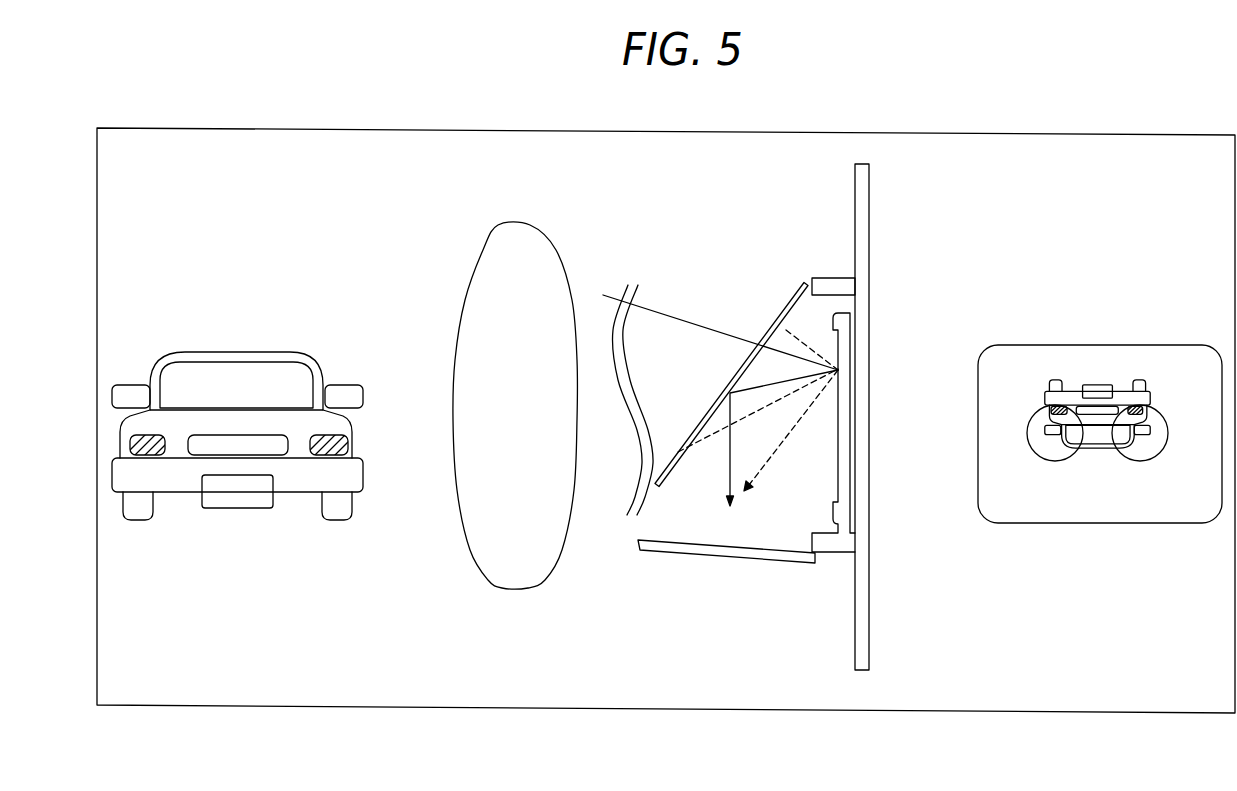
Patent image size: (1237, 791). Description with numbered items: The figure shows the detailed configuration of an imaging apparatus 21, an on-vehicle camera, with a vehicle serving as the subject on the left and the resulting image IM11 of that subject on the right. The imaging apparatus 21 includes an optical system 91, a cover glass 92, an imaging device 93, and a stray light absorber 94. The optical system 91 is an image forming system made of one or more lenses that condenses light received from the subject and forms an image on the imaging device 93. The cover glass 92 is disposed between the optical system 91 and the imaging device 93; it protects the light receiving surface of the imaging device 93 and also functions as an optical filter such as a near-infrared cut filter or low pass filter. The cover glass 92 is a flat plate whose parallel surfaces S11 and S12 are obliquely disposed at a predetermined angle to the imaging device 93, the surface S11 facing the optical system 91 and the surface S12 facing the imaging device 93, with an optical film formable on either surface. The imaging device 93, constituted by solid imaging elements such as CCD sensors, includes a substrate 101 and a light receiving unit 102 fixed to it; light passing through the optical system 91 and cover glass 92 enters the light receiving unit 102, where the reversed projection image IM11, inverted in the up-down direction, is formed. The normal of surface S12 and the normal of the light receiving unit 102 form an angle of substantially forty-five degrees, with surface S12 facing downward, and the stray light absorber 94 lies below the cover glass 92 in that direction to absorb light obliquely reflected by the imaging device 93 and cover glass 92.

The imaging apparatus 21 is at (671, 636).
The optical system 91 is at (518, 225).
The cover glass 92 is at (794, 294).
The imaging device 93 is at (839, 233).
The stray light absorber 94 is at (730, 558).
The substrate 101 is at (857, 622).
The light receiving unit 102 is at (838, 477).
The surface of the cover glass on the optical system side S11 is at (773, 313).
The surface of the cover glass on the imaging device side S12 is at (810, 313).
The image IM11 is at (1100, 437).